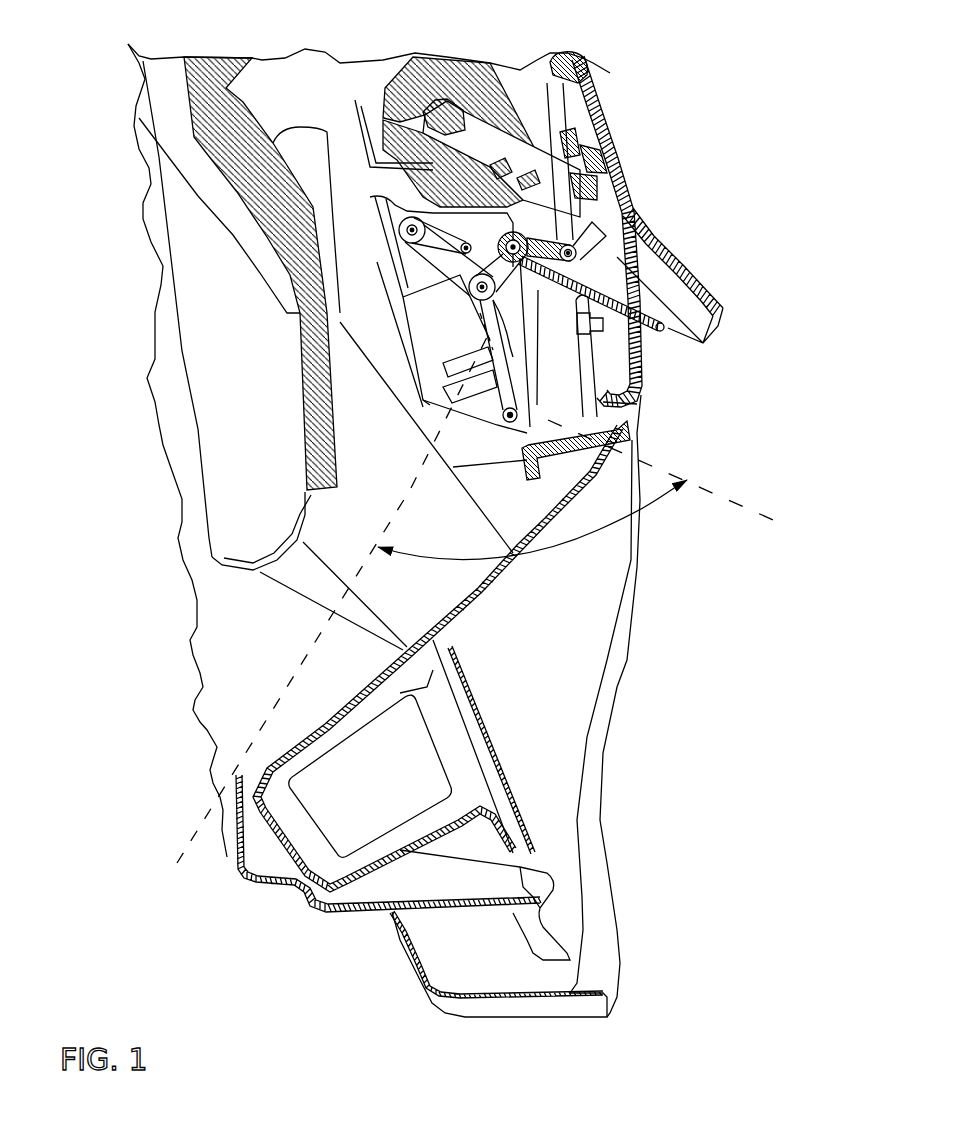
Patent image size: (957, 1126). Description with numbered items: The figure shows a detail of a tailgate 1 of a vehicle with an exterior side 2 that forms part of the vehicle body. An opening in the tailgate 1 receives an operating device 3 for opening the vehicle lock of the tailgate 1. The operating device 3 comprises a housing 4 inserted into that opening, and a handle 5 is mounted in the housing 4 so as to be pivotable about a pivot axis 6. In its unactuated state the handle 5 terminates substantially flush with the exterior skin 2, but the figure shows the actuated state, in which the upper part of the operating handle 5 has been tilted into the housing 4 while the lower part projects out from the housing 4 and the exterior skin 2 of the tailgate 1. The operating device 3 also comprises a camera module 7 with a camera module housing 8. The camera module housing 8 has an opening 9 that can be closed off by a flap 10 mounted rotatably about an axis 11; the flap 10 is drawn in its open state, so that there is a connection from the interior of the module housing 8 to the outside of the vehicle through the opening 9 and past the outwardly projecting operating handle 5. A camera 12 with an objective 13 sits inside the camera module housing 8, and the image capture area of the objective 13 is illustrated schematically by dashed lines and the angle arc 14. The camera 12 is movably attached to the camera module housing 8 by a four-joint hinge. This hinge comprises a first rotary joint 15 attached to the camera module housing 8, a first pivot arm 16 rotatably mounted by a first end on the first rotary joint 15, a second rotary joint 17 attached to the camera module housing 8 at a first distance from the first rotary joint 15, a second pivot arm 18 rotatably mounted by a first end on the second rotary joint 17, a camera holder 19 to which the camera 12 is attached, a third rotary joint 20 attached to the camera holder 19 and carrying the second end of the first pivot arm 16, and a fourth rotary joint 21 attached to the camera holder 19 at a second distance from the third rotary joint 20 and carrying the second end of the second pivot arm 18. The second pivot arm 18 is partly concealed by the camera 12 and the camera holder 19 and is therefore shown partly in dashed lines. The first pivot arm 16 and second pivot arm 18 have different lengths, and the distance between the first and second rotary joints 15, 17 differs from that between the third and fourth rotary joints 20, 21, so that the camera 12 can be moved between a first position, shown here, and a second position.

The tailgate 1 is at (700, 98).
The exterior side 2 is at (630, 603).
The operating device 3 is at (698, 200).
The housing 4 is at (456, 70).
The handle 5 is at (717, 311).
The pivot axis 6 is at (576, 253).
The camera module 7 is at (370, 293).
The camera module housing 8 is at (358, 258).
The opening 9 is at (533, 405).
The flap 10 is at (664, 328).
The axis 11 is at (513, 247).
The camera 12 is at (433, 352).
The objective 13 is at (473, 395).
The angle arc 14 is at (598, 530).
The first rotary joint 15 is at (522, 190).
The first pivot arm 16 is at (440, 238).
The second rotary joint 17 is at (512, 422).
The second pivot arm 18 is at (503, 379).
The camera holder 19 is at (501, 325).
The third rotary joint 20 is at (413, 230).
The fourth rotary joint 21 is at (483, 287).